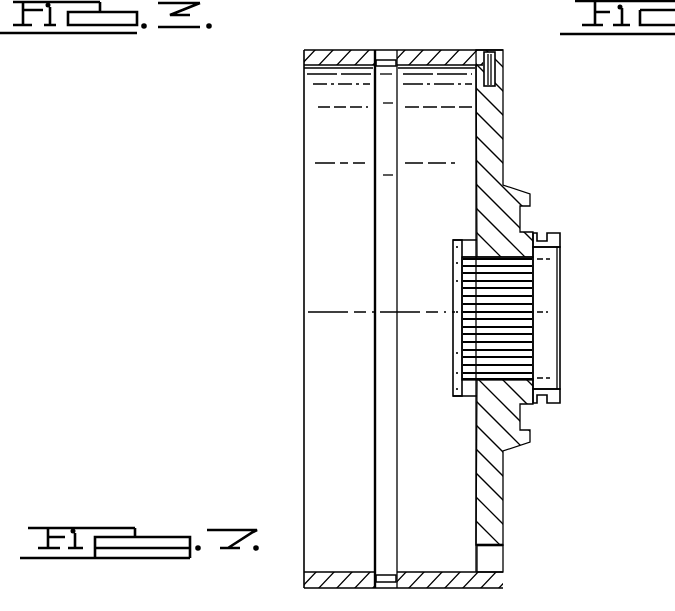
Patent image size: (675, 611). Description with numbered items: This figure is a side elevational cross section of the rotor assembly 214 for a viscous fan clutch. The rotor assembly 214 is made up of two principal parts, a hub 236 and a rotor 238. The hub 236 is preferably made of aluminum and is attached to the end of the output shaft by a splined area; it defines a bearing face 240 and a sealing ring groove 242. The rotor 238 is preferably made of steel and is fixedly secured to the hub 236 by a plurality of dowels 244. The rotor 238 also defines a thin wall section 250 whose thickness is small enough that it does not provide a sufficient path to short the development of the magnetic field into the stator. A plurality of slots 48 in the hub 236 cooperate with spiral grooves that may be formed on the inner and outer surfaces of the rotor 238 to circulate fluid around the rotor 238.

The rotor assembly 214 is at (608, 202).
The rotor 238 is at (347, 50).
The thin wall section 250 is at (386, 53).
The dowel 244 is at (500, 86).
The sealing ring groove 242 is at (548, 232).
The bearing face 240 is at (453, 240).
The hub 236 is at (497, 478).
The slot 48 is at (494, 558).